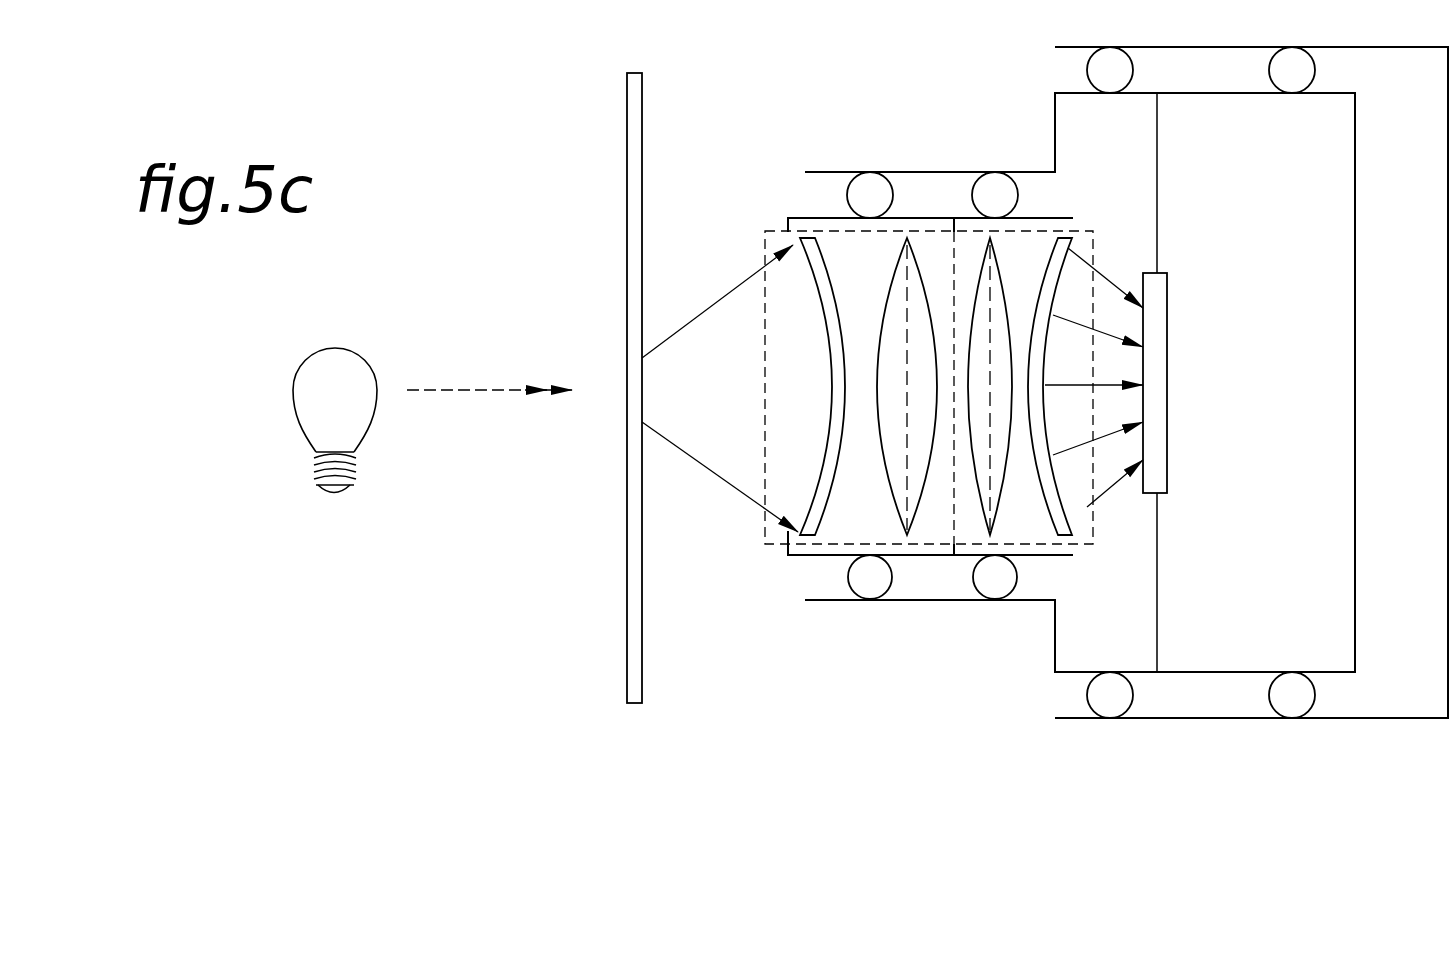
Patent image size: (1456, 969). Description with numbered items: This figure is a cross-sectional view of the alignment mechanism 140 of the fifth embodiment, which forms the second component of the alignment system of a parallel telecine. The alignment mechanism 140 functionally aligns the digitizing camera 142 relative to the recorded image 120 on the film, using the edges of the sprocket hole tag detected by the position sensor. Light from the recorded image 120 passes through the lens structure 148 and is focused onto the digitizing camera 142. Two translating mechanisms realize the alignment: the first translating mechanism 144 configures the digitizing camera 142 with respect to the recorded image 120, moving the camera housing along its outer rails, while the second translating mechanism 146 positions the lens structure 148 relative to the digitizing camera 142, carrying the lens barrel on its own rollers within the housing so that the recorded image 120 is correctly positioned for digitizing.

The recorded image 120 is at (625, 400).
The alignment mechanism 140 is at (962, 672).
The digitizing camera 142 is at (1168, 300).
The first translating mechanism 144 is at (1292, 720).
The second translating mechanism 146 is at (870, 602).
The lens structure 148 is at (765, 243).